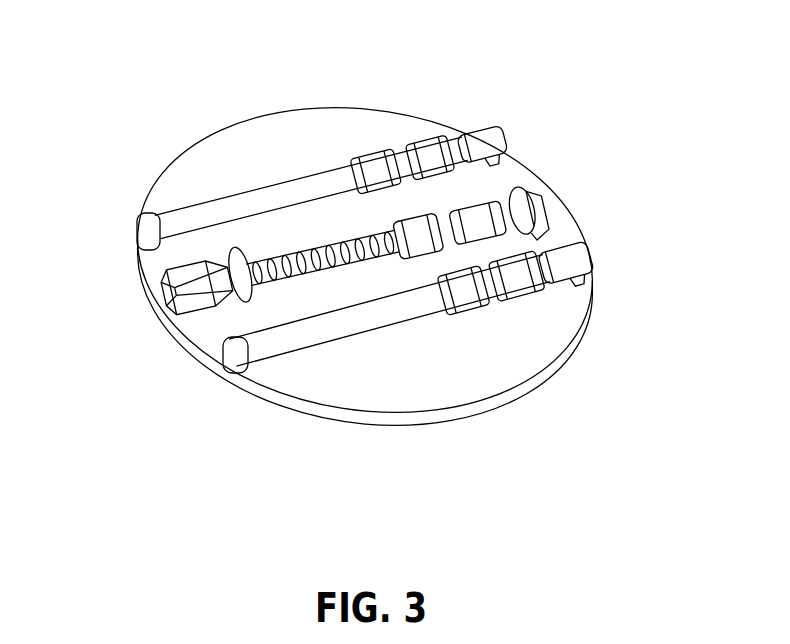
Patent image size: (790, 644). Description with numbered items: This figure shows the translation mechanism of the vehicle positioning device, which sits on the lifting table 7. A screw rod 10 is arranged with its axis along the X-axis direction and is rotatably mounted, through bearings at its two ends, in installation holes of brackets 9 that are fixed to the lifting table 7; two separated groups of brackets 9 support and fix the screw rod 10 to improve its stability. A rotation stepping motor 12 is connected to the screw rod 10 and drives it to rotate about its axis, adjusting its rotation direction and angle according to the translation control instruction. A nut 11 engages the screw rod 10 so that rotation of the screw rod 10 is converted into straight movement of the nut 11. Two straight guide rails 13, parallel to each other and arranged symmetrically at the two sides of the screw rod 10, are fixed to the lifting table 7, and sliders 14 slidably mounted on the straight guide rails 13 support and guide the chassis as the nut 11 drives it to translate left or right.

The lifting table 7 is at (285, 137).
The bracket 9 is at (538, 205).
The screw rod 10 is at (307, 258).
The nut 11 is at (478, 222).
The rotation stepping motor 12 is at (192, 270).
The straight guide rail 13 is at (198, 213).
The slider 14 is at (428, 157).